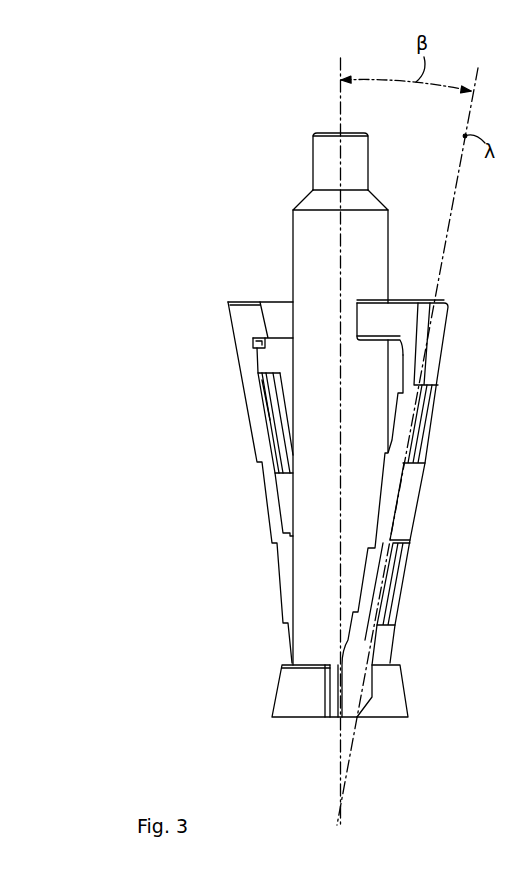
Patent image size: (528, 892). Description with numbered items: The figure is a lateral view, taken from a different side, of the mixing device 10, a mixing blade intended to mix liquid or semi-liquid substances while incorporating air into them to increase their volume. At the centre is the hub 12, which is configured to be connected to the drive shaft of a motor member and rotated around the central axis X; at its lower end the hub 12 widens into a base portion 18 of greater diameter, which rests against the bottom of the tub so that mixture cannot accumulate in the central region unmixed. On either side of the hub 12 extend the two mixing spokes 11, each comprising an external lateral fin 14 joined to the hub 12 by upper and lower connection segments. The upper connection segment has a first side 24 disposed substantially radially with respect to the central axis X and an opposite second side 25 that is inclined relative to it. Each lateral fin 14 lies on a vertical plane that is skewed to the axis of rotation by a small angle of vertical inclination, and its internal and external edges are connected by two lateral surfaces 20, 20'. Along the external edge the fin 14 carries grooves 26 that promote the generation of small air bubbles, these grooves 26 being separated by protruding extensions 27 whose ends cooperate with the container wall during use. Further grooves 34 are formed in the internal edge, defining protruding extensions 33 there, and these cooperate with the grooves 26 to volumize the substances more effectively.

The mixing device 10 is at (289, 127).
The mixing spokes 11 is at (236, 290).
The hub 12 is at (305, 228).
The lateral fin 14 is at (255, 385).
The base portion 18 is at (300, 695).
The lateral surface 20 is at (243, 405).
The lateral surface 20' is at (418, 531).
The first side 24 is at (384, 326).
The second side 25 is at (283, 325).
The grooves 26 is at (418, 505).
The protruding extensions 27 is at (437, 414).
The protruding extensions 33 is at (283, 383).
The further grooves 34 is at (283, 503).